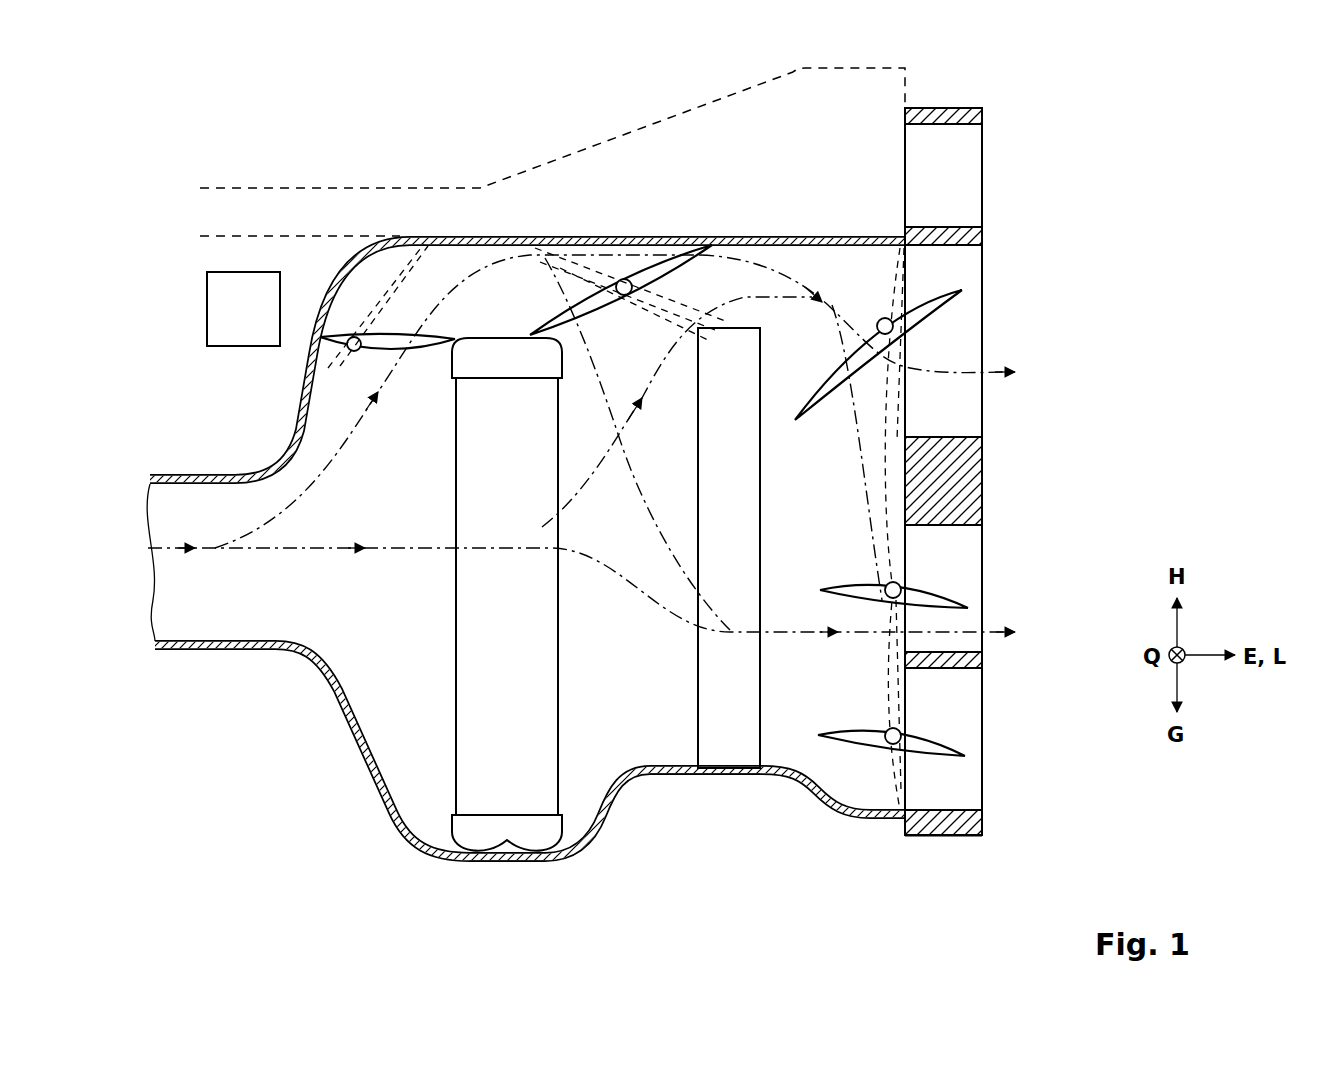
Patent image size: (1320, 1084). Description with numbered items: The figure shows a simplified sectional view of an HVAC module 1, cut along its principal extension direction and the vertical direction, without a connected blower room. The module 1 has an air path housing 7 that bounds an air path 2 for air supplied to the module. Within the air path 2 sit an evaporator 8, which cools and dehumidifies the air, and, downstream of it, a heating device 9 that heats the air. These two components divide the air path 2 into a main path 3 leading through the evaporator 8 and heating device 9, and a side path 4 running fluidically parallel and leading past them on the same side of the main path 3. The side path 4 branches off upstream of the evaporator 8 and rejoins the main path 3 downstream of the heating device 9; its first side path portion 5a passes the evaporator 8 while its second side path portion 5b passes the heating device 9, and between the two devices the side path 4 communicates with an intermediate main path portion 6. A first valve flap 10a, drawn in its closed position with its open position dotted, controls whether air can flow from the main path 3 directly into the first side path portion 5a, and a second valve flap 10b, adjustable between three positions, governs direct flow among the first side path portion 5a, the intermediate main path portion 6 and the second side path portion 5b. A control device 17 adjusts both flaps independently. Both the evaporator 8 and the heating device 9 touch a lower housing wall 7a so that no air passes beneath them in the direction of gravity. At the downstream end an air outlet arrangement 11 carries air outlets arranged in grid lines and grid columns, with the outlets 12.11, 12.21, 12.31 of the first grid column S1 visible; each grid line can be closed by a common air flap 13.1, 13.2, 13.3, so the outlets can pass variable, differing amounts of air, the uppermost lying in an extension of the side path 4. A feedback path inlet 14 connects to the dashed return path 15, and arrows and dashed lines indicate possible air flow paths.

The HVAC module 1 is at (1172, 182).
The air path 2 is at (581, 571).
The main path 3 is at (846, 452).
The side path 4 is at (857, 314).
The first side path portion 5a is at (457, 401).
The second side path portion 5b is at (657, 444).
The intermediate main path portion 6 is at (677, 415).
The air path housing 7 is at (207, 655).
The lower housing wall 7a is at (505, 862).
The evaporator 8 is at (507, 594).
The heating device 9 is at (729, 548).
The first valve flap 10a is at (397, 348).
The second valve flap 10b is at (600, 298).
The air outlet arrangement 11 is at (1048, 437).
The air outlet 12.11 is at (965, 339).
The air outlet 12.21 is at (965, 568).
The air outlet 12.31 is at (965, 705).
The air flap 13.1 is at (928, 312).
The air flap 13.2 is at (935, 594).
The air flap 13.3 is at (935, 745).
The feedback path inlet 14 is at (965, 182).
The return path 15 is at (552, 152).
The control device 17 is at (205, 305).
The grid column S1 is at (938, 845).